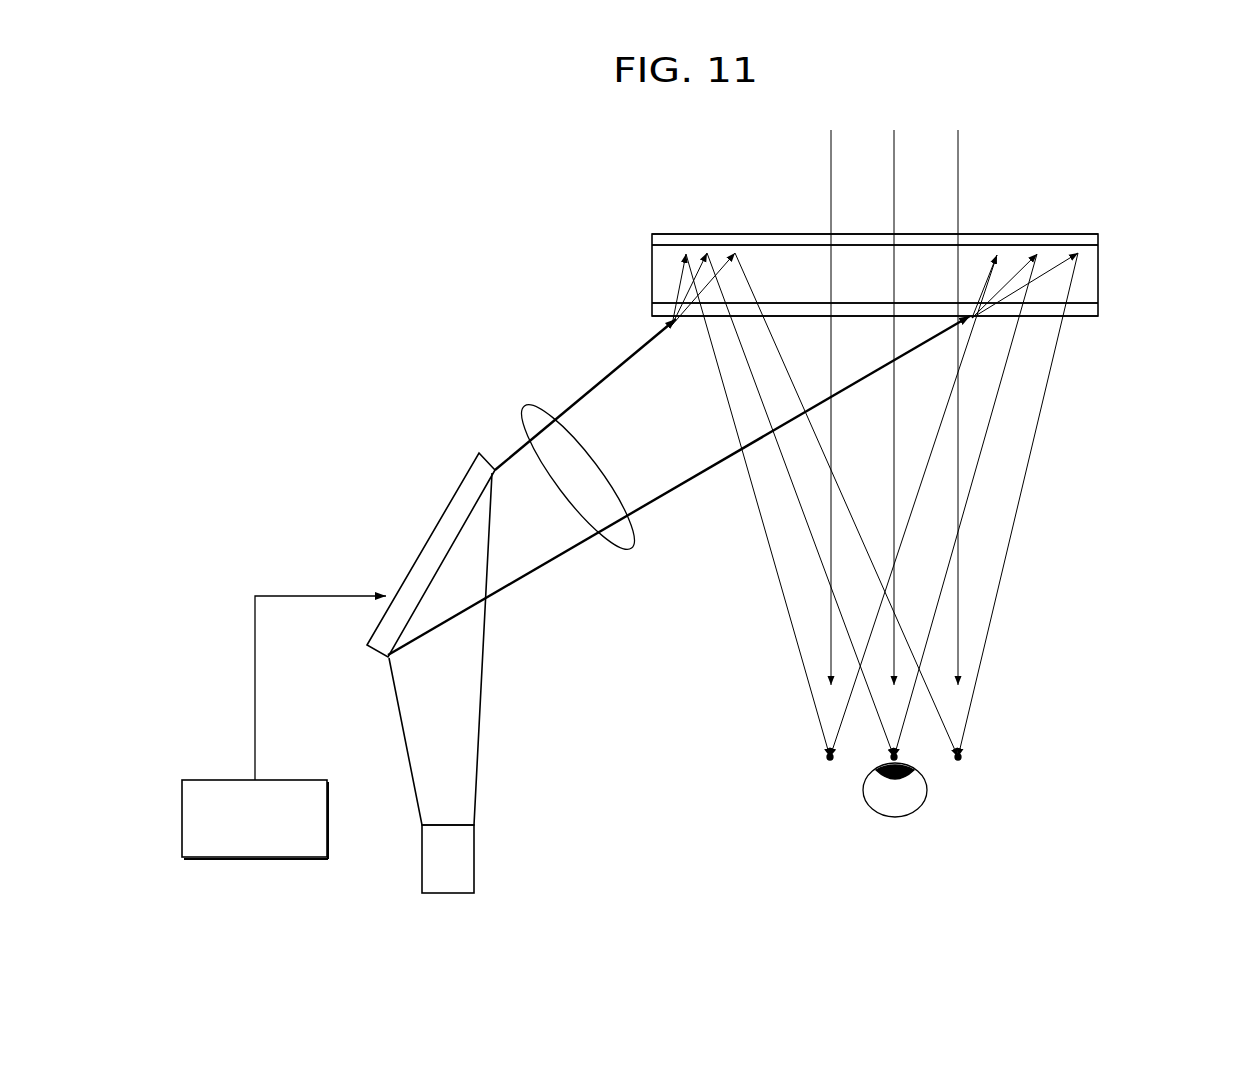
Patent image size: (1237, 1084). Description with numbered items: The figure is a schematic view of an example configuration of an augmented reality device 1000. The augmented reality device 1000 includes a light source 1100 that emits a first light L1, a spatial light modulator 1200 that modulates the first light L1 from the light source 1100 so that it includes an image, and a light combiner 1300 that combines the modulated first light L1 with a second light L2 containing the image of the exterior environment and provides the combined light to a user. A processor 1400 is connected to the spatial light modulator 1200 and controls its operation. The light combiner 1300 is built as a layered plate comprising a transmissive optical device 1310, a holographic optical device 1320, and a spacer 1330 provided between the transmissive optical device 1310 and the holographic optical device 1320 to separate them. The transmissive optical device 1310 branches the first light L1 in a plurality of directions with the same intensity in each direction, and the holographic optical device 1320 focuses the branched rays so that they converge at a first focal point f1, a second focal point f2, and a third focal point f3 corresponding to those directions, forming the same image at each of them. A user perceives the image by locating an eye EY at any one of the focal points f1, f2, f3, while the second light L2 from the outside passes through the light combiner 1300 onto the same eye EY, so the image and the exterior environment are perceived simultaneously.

The augmented reality device 1000 is at (466, 252).
The light source 1100 is at (447, 893).
The spatial light modulator 1200 is at (437, 531).
The light combiner 1300 is at (936, 258).
The transmissive optical device 1310 is at (1098, 310).
The holographic optical device 1320 is at (1070, 236).
The spacer 1330 is at (1100, 281).
The processor 1400 is at (253, 858).
The first light L1 is at (527, 407).
The second light L2 is at (894, 391).
The first focal point f1 is at (893, 758).
The second focal point f2 is at (830, 758).
The third focal point f3 is at (958, 758).
The eye EY is at (895, 818).